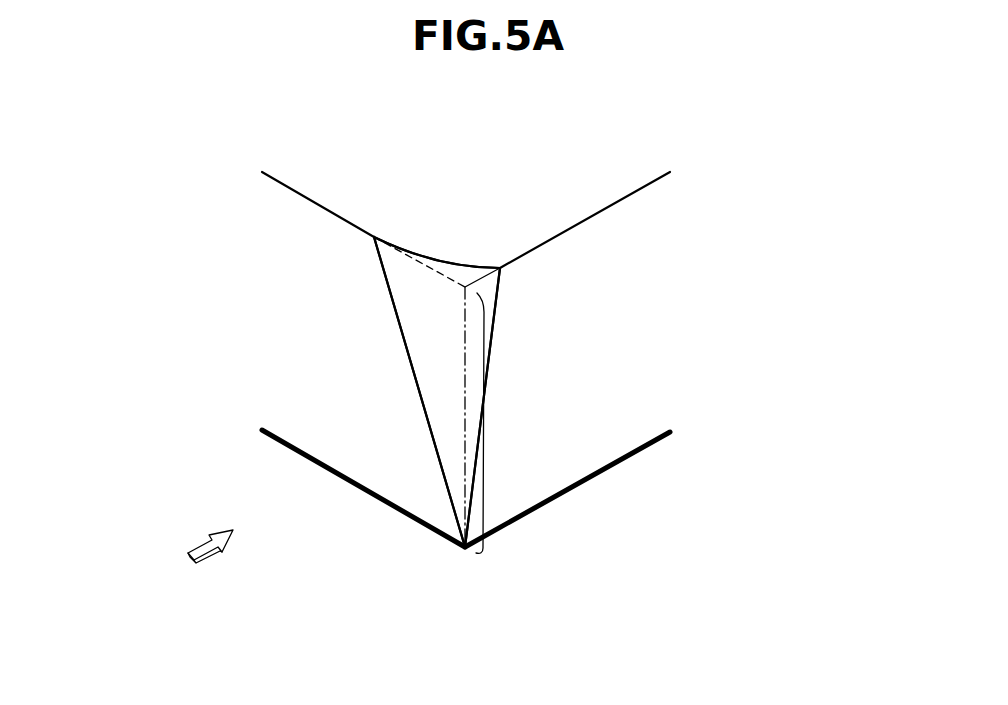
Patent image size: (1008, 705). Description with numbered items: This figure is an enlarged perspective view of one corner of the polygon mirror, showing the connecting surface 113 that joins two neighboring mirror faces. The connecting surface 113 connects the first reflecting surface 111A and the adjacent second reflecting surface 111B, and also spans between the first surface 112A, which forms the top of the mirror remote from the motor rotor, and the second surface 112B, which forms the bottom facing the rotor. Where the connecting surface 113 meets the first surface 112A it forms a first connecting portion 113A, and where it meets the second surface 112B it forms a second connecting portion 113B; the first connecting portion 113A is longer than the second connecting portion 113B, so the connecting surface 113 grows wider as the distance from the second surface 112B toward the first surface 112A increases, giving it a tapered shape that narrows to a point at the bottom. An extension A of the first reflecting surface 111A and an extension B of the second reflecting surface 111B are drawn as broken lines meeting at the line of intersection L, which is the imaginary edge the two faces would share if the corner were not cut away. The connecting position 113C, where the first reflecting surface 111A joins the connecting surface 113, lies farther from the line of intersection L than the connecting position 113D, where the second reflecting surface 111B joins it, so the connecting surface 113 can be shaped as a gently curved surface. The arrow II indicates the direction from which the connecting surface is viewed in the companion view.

The first reflecting surface 111A is at (342, 432).
The second reflecting surface 111B is at (572, 435).
The first surface 112A is at (342, 197).
The second surface 112B is at (398, 511).
The connecting surface 113 is at (437, 313).
The first connecting portion 113A is at (463, 265).
The second connecting portion 113B is at (465, 548).
The connecting position 113C is at (390, 297).
The connecting position 113D is at (493, 338).
The extension of the first reflecting surface A is at (435, 350).
The extension of the second reflecting surface B is at (487, 293).
The line of intersection L is at (487, 426).
The arrow II is at (210, 558).